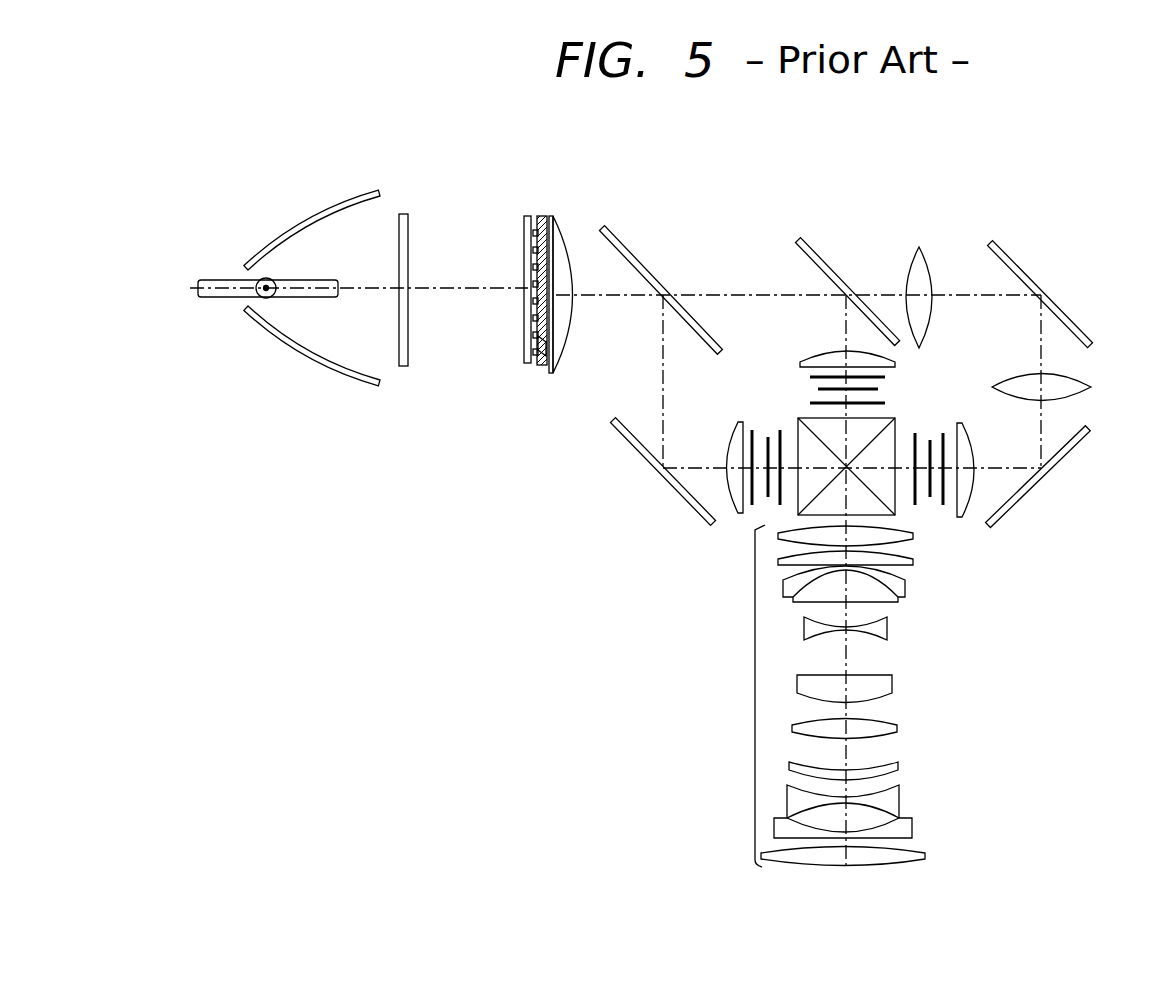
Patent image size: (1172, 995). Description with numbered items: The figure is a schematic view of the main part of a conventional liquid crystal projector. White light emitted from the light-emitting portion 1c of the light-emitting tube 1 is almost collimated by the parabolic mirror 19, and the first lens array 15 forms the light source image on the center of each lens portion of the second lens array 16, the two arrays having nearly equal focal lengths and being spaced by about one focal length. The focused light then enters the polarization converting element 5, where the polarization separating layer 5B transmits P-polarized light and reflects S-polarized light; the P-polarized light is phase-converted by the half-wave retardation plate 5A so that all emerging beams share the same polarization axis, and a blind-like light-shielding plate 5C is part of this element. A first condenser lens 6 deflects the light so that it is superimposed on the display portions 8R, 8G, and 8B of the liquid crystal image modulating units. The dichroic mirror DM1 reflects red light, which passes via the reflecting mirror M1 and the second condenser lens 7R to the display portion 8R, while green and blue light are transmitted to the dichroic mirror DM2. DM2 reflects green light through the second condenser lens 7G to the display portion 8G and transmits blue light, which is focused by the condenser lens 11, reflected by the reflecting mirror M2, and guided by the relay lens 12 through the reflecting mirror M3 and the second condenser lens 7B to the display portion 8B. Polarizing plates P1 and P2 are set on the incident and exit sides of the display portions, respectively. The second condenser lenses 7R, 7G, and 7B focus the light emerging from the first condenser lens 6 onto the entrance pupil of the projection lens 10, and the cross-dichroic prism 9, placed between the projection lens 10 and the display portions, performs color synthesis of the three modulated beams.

The light-emitting tube 1 is at (278, 273).
The light-emitting portion 1c is at (272, 297).
The parabolic mirror 19 is at (278, 242).
The first lens array 15 is at (404, 212).
The second lens array 16 is at (526, 240).
The polarization converting element 5 is at (553, 271).
The λ/2 retardation plate 5A is at (554, 240).
The polarization separating layer 5B is at (540, 214).
The light-shielding plate 5C is at (538, 346).
The first condenser lens 6 is at (570, 250).
The dichroic mirror DM1 is at (650, 266).
The dichroic mirror DM2 is at (833, 268).
The condenser lens 11 is at (926, 262).
The reflecting mirror M2 is at (1020, 268).
The relay lens 12 is at (1080, 382).
The second condenser lens 7G is at (815, 355).
The display portion 8G is at (876, 389).
The polarizing plate P1 is at (880, 376).
The polarizing plate P2 is at (880, 403).
The display portion 8R is at (766, 437).
The second condenser lens 7R is at (728, 440).
The cross-dichroic prism 9 is at (895, 436).
The display portion 8B is at (931, 500).
The second condenser lens 7B is at (967, 455).
The reflecting mirror M1 is at (626, 446).
The reflecting mirror M3 is at (1062, 466).
The projection lens 10 is at (750, 690).